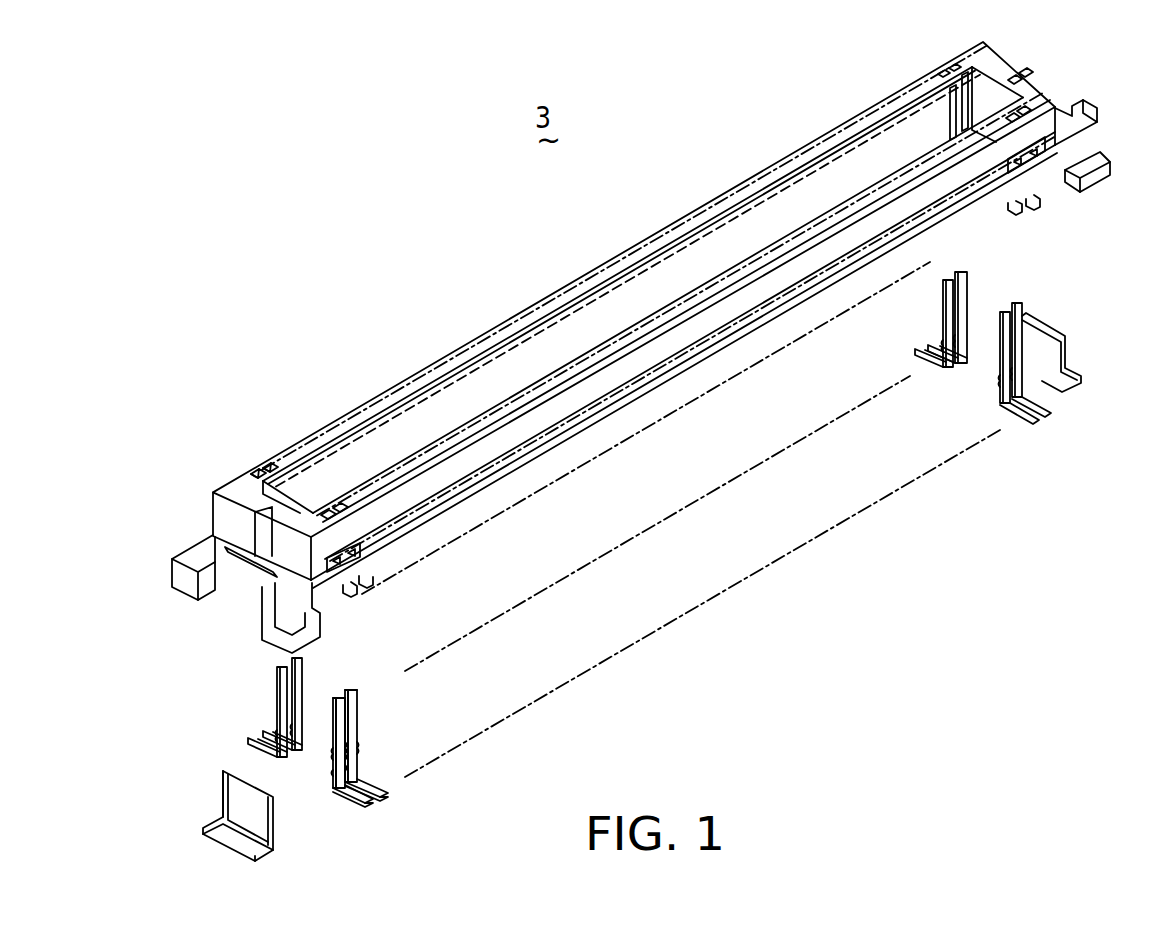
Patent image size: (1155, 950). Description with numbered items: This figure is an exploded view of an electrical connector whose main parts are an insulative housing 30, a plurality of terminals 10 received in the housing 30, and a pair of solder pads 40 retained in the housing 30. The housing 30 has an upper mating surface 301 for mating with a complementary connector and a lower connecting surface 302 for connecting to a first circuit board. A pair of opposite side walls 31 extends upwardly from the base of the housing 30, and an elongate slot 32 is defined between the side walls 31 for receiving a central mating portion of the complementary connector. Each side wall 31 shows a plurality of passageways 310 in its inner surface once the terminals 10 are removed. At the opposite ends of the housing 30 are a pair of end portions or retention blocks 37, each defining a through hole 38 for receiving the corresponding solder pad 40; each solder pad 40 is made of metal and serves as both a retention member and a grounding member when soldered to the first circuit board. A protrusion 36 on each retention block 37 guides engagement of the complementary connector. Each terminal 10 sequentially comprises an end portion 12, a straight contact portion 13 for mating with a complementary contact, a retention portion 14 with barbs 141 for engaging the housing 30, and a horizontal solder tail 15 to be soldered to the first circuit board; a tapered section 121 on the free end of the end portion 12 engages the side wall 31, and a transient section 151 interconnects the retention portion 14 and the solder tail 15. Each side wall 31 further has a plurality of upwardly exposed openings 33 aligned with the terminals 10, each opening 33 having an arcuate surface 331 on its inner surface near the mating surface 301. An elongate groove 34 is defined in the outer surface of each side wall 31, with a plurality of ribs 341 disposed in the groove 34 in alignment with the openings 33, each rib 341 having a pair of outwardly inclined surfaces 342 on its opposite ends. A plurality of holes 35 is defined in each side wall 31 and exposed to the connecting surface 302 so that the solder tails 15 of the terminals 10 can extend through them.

The terminal 10 is at (382, 744).
The end portion 12 is at (355, 708).
The tapered section 121 is at (352, 687).
The straight contact portion 13 is at (355, 735).
The retention portion 14 is at (355, 763).
The barbs 141 is at (337, 790).
The solder tail 15 is at (362, 805).
The transient section 151 is at (373, 787).
The insulative housing 30 is at (630, 335).
The side wall 31 is at (822, 138).
The elongate slot 32 is at (730, 253).
The opening 33 is at (960, 58).
The passageway 310 is at (968, 102).
The mating surface 301 is at (1000, 77).
The connecting surface 302 is at (338, 612).
The arcuate surface 331 is at (260, 467).
The elongate groove 34 is at (430, 513).
The rib 341 is at (362, 553).
The outwardly inclined surfaces 342 is at (1020, 158).
The hole 35 is at (1010, 213).
The protrusion 36 is at (222, 507).
The end portion 37 is at (207, 543).
The through hole 38 is at (255, 560).
The solder pad 40 is at (234, 854).